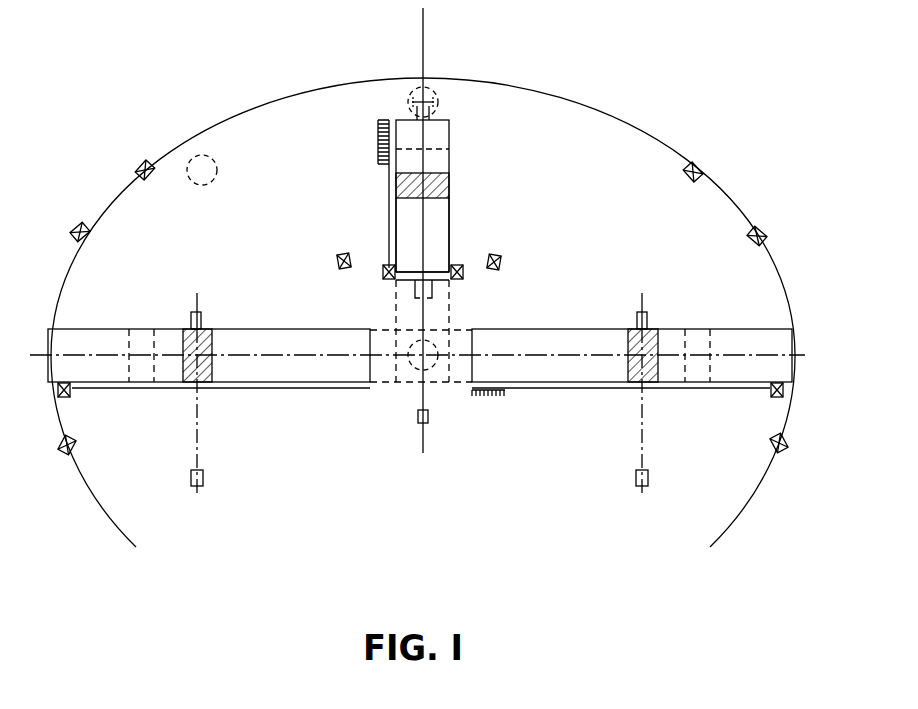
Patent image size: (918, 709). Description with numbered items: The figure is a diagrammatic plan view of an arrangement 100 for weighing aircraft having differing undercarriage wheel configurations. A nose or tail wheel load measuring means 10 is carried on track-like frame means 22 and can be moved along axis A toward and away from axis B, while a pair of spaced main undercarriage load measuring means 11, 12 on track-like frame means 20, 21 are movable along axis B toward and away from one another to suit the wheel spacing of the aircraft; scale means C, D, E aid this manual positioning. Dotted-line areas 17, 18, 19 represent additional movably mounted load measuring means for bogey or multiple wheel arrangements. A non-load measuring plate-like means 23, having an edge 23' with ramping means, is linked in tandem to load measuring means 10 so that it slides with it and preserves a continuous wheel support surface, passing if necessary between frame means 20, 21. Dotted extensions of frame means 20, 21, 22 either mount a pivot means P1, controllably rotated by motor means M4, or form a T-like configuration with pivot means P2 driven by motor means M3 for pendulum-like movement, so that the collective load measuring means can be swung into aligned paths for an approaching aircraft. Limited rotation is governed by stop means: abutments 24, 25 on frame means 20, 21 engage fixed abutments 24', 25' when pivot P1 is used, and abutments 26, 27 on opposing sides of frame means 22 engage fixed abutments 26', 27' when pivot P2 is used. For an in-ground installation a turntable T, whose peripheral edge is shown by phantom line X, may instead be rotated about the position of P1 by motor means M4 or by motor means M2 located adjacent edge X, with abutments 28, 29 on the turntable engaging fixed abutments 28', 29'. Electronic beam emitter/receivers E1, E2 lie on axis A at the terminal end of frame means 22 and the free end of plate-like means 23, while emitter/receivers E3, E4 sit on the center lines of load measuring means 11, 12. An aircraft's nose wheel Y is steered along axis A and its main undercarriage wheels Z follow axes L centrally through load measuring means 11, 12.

The arrangement 100 is at (580, 140).
The load measuring means 10 is at (450, 185).
The load measuring means 11 is at (213, 360).
The load measuring means 12 is at (628, 362).
The additional load measuring means 17 is at (145, 330).
The additional load measuring means 18 is at (700, 330).
The additional load measuring means 19 is at (440, 158).
The track-like frame means 20 is at (310, 330).
The track-like frame means 21 is at (592, 330).
The track-like frame means 22 is at (450, 132).
The non-load measuring means/plate-like means 23 is at (449, 235).
The edge 23' is at (455, 330).
The abutment 24 is at (87, 404).
The fixed abutment 24' is at (94, 459).
The abutment 25 is at (743, 404).
The fixed abutment 25' is at (742, 458).
The abutment 26 is at (362, 240).
The fixed abutment 26' is at (310, 253).
The abutment 27 is at (454, 283).
The fixed abutment 27' is at (523, 253).
The abutment 28 is at (61, 216).
The fixed abutment 28' is at (124, 156).
The abutment 29 is at (778, 218).
The fixed abutment 29' is at (720, 157).
The axis A is at (424, 22).
The axis B is at (797, 353).
The scale means C is at (388, 180).
The scale means D is at (132, 390).
The scale means E is at (562, 392).
The first electronic beam emitter/receiver E1 is at (418, 93).
The second electronic beam emitter/receiver E2 is at (413, 292).
The electronic beam emitter/receiver E3 is at (203, 318).
The electronic beam emitter/receiver E4 is at (645, 318).
The axes L is at (199, 432).
The motor means M2 is at (205, 163).
The motor means M3 is at (436, 96).
The motor means M4 is at (432, 366).
The pivot means P1 is at (420, 362).
The pivot means P2 is at (410, 103).
The turntable T is at (595, 183).
The phantom line / peripheral edge X is at (298, 96).
The nose wheel Y is at (417, 421).
The main undercarriage wheels Z is at (204, 478).